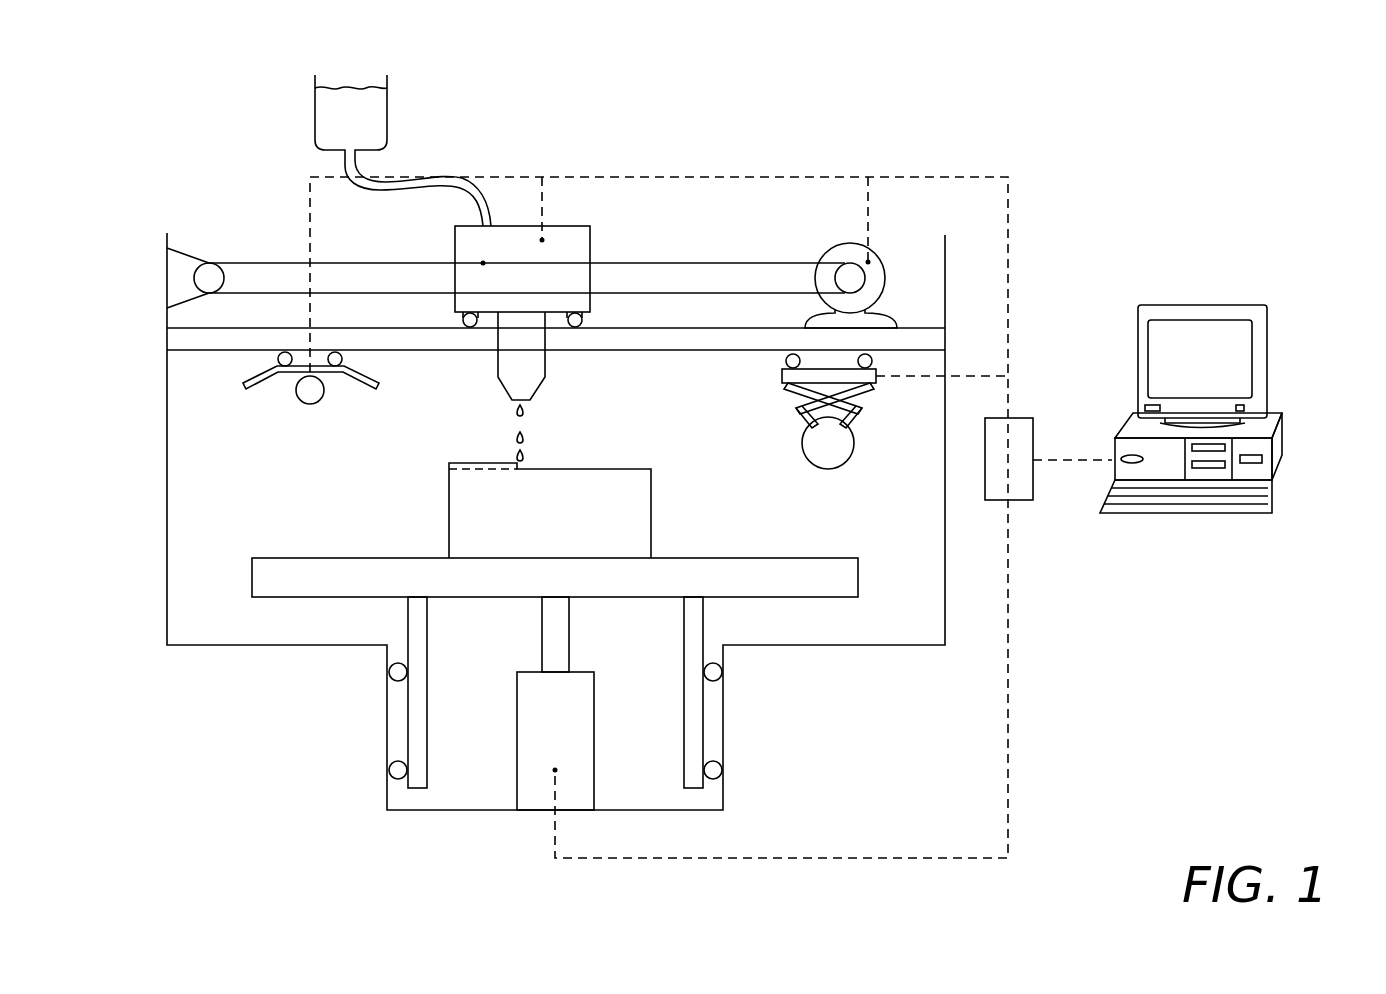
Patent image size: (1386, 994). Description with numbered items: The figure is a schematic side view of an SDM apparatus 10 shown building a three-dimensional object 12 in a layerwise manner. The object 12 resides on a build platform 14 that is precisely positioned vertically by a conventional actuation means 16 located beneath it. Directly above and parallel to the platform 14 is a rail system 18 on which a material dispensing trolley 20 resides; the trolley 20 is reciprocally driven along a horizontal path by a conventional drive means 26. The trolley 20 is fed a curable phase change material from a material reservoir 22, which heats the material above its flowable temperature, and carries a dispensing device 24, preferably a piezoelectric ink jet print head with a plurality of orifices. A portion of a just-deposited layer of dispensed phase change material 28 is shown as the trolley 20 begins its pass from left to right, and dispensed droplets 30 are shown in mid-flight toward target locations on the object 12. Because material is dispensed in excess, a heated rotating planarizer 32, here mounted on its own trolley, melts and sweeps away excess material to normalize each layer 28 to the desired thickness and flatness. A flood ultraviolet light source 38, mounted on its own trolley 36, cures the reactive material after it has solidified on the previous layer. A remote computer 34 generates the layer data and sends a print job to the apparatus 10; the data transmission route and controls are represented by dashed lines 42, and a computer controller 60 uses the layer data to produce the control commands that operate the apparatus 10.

The SDM apparatus 10 is at (190, 173).
The three-dimensional object 12 is at (658, 492).
The build platform 14 is at (285, 558).
The actuation means 16 is at (535, 793).
The rail system 18 is at (203, 353).
The material dispensing trolley 20 is at (527, 315).
The material reservoir 22 is at (377, 112).
The dispensing device 24 is at (500, 363).
The drive means 26 is at (843, 245).
The layer of dispensed phase change material 28 is at (483, 462).
The dispensed droplets 30 is at (524, 408).
The planarizer 32 is at (853, 458).
The remote computer 34 is at (1285, 457).
The trolley 36 is at (287, 420).
The flood ultraviolet light source 38 is at (313, 405).
The data transmission route and controls 42 is at (310, 203).
The computer controller 60 is at (1025, 417).